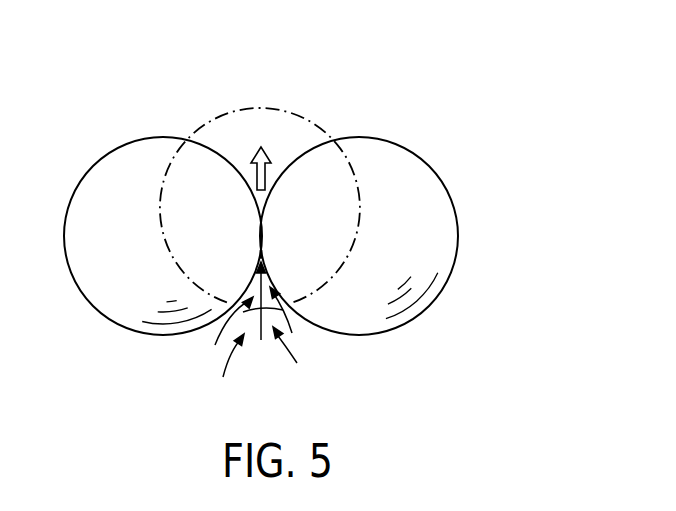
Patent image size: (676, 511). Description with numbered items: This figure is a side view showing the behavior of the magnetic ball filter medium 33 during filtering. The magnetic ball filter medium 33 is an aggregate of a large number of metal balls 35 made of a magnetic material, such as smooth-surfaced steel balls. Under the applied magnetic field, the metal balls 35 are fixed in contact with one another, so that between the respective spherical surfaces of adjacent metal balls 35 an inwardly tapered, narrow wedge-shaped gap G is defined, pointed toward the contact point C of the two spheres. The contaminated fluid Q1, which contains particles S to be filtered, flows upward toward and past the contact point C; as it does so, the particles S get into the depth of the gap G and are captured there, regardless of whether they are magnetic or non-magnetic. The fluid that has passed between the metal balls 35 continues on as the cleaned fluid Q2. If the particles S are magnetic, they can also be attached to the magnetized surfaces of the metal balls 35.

The magnetic ball filter medium 33 is at (307, 79).
The metal balls 35 is at (125, 145).
The cleaned fluid Q2 is at (253, 152).
The contaminated fluid Q1 is at (296, 364).
The contact point C is at (260, 232).
The gap G is at (258, 256).
The particles S is at (263, 259).